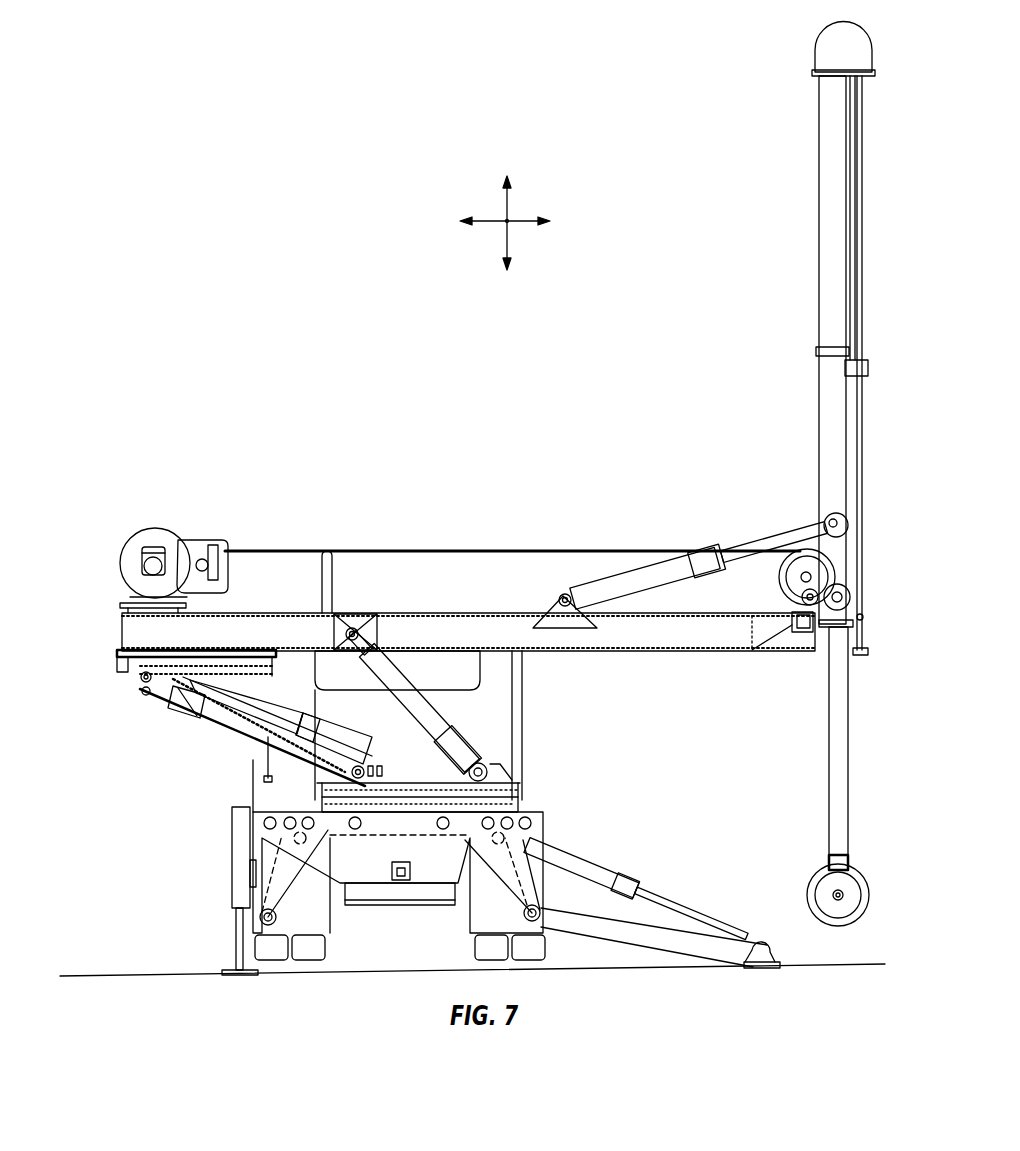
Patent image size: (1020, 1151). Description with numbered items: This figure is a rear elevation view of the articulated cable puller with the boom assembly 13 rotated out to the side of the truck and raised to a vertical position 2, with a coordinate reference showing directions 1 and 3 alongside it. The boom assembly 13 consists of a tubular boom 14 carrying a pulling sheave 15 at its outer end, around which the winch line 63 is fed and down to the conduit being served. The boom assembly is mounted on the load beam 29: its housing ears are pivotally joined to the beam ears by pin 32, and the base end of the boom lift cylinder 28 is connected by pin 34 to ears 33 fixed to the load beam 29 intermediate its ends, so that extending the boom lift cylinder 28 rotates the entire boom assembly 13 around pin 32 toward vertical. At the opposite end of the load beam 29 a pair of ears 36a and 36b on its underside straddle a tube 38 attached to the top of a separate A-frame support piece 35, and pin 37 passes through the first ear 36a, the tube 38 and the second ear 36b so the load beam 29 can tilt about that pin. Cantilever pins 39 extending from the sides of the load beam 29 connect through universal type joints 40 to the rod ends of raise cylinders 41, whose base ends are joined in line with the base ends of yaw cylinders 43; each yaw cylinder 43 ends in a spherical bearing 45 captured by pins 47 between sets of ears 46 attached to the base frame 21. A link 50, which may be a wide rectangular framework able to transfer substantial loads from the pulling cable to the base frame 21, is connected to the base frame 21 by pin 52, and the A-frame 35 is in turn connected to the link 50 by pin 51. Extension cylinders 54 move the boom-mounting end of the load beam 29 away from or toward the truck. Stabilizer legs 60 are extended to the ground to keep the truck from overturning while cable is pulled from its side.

The first axis 1 is at (510, 218).
The vertical position 2 is at (505, 210).
The third axis 3 is at (513, 222).
The boom assembly 13 is at (812, 248).
The tubular boom 14 is at (835, 752).
The pulling sheave 15 is at (852, 888).
The base frame 21 is at (485, 787).
The boom lift cylinder 28 is at (672, 563).
The load beam 29 is at (243, 625).
The pin 32 is at (810, 632).
The ears 33 is at (556, 622).
The pin 34 is at (558, 595).
The A-frame support piece 35 is at (220, 738).
The first ear 36a is at (120, 656).
The second ear 36b is at (270, 652).
The pin 37 is at (118, 663).
The tube 38 is at (132, 675).
The cantilever pins 39 is at (350, 628).
The universal type joint 40 is at (378, 640).
The raise cylinder 41 is at (395, 682).
The yaw cylinder 43 is at (460, 747).
The spherical bearing 45 is at (487, 768).
The ears 46 is at (465, 836).
The pins 47 is at (500, 770).
The link 50 is at (250, 747).
The pin 51 is at (143, 695).
The pin 52 is at (358, 762).
The extension cylinders 54 is at (323, 723).
The stabilizer legs 60 is at (232, 842).
The winch line 63 is at (495, 548).